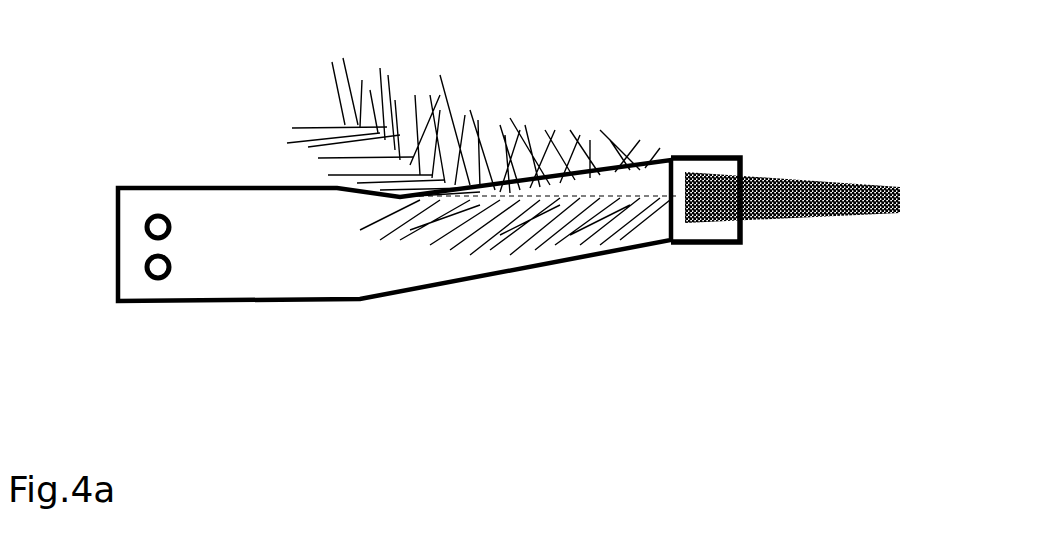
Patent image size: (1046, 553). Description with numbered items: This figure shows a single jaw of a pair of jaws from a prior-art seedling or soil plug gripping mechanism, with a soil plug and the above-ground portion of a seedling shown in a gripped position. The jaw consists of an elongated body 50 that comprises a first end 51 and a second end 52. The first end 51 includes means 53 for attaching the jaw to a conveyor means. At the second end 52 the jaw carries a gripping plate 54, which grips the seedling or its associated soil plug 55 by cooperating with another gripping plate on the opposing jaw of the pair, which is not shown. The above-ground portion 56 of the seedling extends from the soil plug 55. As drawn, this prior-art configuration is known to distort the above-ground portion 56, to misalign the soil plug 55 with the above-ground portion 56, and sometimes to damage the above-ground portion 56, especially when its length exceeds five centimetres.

The elongated body 50 is at (143, 103).
The first end 51 is at (145, 303).
The second end 52 is at (743, 240).
The means for attaching the jaw to a conveyor means 53 is at (143, 268).
The gripping plate 54 is at (693, 235).
The soil plug 55 is at (898, 127).
The above-ground portion of a seedling 56 is at (670, 127).